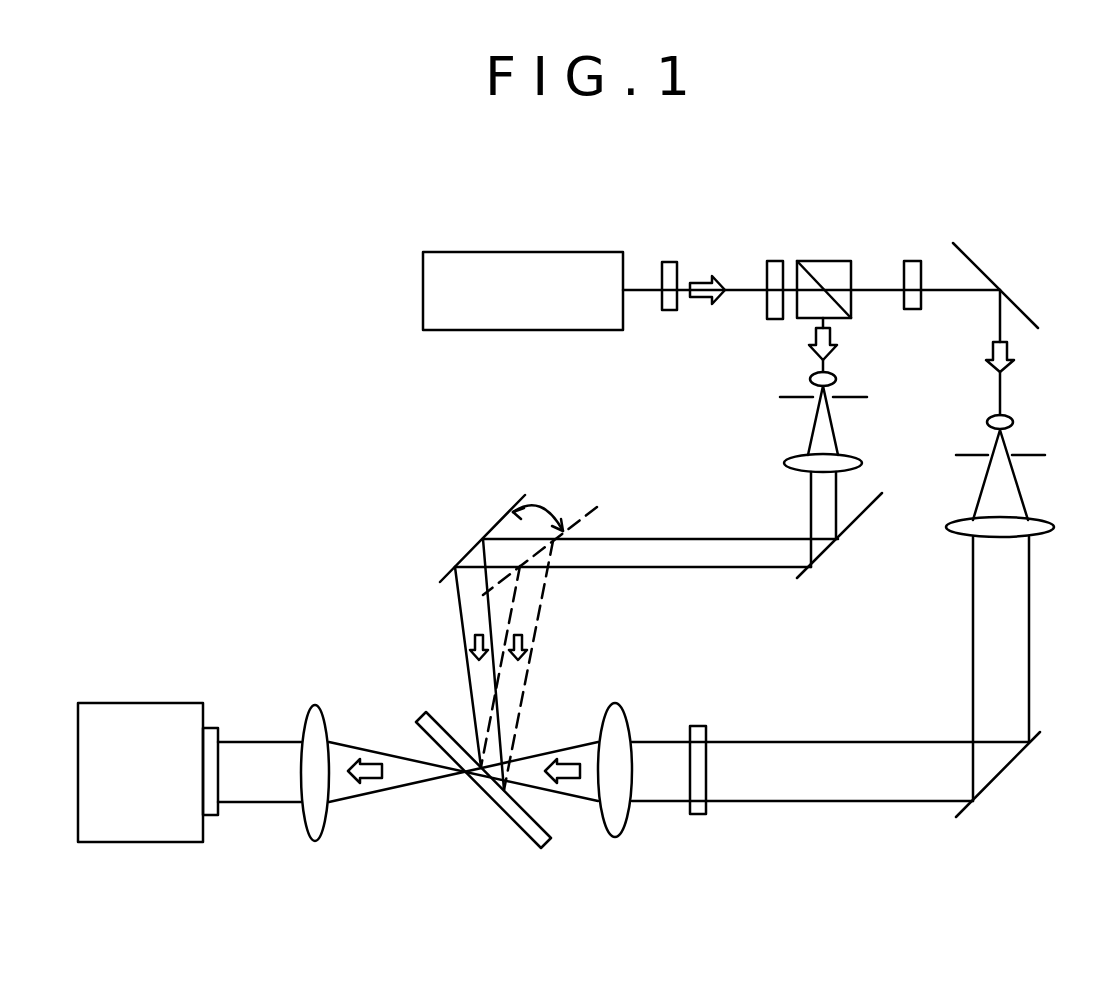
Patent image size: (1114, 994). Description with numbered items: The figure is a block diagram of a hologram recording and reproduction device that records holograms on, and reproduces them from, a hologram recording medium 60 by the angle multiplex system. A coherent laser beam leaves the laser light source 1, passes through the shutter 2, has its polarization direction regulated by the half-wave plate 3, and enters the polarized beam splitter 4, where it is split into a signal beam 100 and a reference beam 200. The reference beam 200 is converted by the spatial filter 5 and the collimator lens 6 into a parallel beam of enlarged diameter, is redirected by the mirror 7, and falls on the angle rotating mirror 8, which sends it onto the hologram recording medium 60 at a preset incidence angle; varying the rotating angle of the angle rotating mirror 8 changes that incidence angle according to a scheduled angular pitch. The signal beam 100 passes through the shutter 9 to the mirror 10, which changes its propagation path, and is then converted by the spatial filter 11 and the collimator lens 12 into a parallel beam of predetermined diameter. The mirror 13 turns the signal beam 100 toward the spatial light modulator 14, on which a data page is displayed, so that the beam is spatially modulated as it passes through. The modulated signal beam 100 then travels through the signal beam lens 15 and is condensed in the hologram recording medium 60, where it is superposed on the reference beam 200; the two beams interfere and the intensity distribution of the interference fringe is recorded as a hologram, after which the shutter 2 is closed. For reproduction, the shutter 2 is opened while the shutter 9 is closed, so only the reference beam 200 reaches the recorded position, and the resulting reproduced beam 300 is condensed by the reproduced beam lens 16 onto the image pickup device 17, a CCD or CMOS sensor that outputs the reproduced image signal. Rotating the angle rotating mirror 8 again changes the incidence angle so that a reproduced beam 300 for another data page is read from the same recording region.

The laser light source 1 is at (517, 252).
The shutter 2 is at (667, 262).
The half-wave plate 3 is at (767, 312).
The polarized beam splitter 4 is at (822, 261).
The spatial filter 5 is at (857, 395).
The collimator lens 6 is at (852, 456).
The mirror 7 is at (833, 544).
The angle rotating mirror 8 is at (447, 574).
The shutter 9 is at (912, 261).
The mirror 10 is at (983, 272).
The spatial filter 11 is at (1042, 455).
The collimator lens 12 is at (1046, 520).
The mirror 13 is at (1010, 762).
The spatial light modulator 14 is at (698, 726).
The signal beam lens 15 is at (611, 703).
The reproduced beam lens 16 is at (315, 705).
The image pickup device 17 is at (165, 703).
The hologram recording medium 60 is at (531, 850).
The signal beam 100 is at (1010, 352).
The reference beam 200 is at (810, 345).
The reproduced beam 300 is at (414, 785).